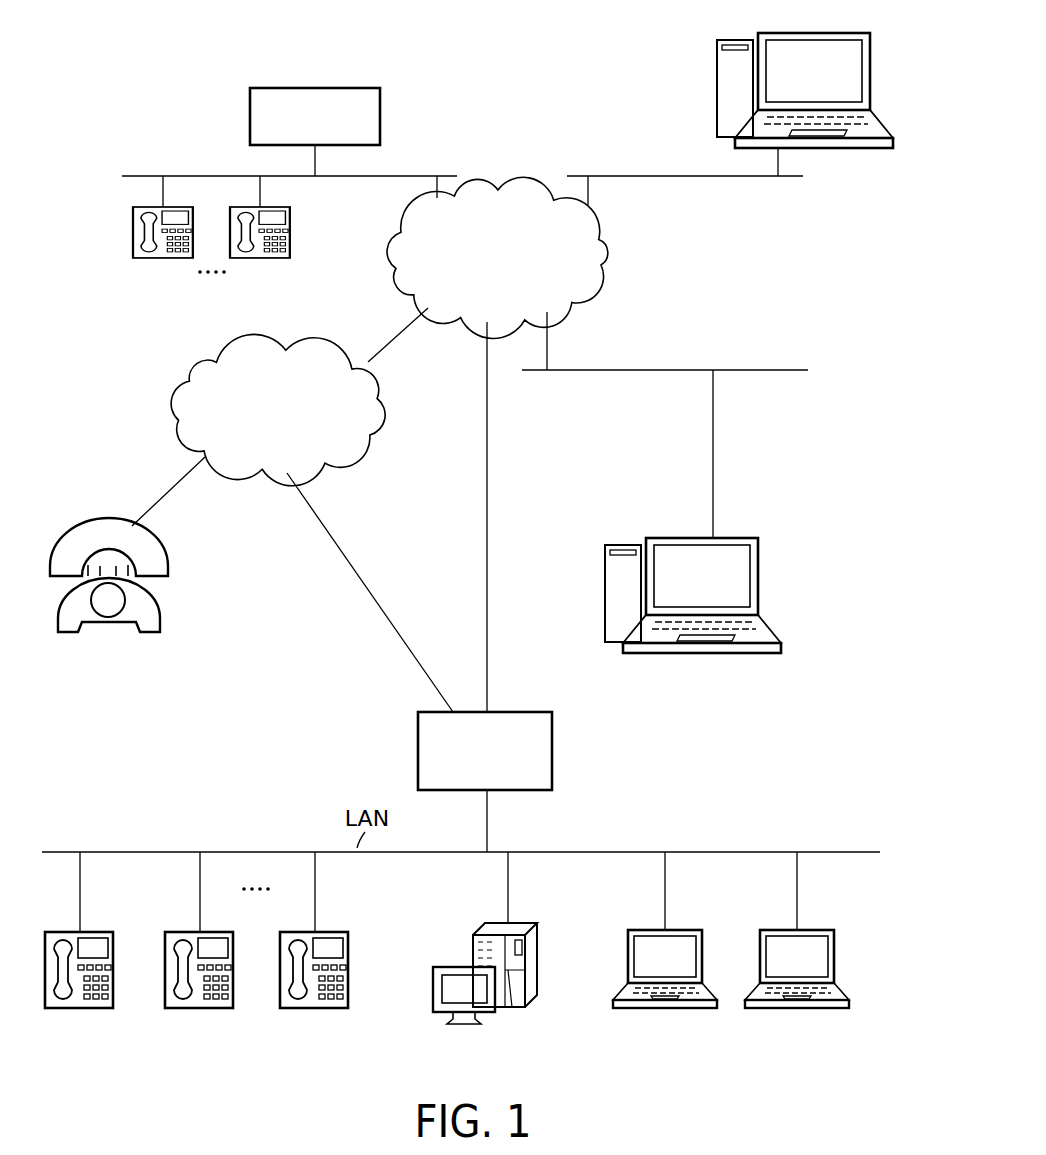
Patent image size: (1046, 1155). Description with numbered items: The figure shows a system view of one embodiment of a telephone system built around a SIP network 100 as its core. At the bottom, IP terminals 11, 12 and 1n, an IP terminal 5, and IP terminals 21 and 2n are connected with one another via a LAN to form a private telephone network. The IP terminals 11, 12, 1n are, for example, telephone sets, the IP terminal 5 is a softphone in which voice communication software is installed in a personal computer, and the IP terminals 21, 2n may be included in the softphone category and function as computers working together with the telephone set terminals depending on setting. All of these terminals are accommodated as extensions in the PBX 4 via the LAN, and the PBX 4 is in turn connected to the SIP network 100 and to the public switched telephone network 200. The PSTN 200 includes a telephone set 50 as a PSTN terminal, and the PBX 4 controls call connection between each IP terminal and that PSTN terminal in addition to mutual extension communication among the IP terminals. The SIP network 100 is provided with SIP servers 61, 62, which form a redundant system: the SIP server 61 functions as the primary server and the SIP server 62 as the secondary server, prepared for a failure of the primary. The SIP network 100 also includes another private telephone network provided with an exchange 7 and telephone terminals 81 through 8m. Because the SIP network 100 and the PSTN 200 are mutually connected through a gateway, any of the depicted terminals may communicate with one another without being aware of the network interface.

The exchange 7 is at (382, 110).
The telephone terminal 81 is at (163, 231).
The telephone terminal 8m is at (260, 231).
The SIP network 100 is at (605, 258).
The public switched telephone network (PSTN) 200 is at (383, 408).
The telephone set 50 is at (163, 600).
The SIP server 61 is at (858, 150).
The SIP server 62 is at (758, 656).
The PBX 4 is at (553, 736).
The IP terminal 11 is at (100, 1009).
The IP terminal 12 is at (218, 1009).
The IP terminal 1n is at (335, 1009).
The IP terminal 5 is at (522, 1010).
The IP terminal 21 is at (698, 1010).
The IP terminal 2n is at (830, 1010).